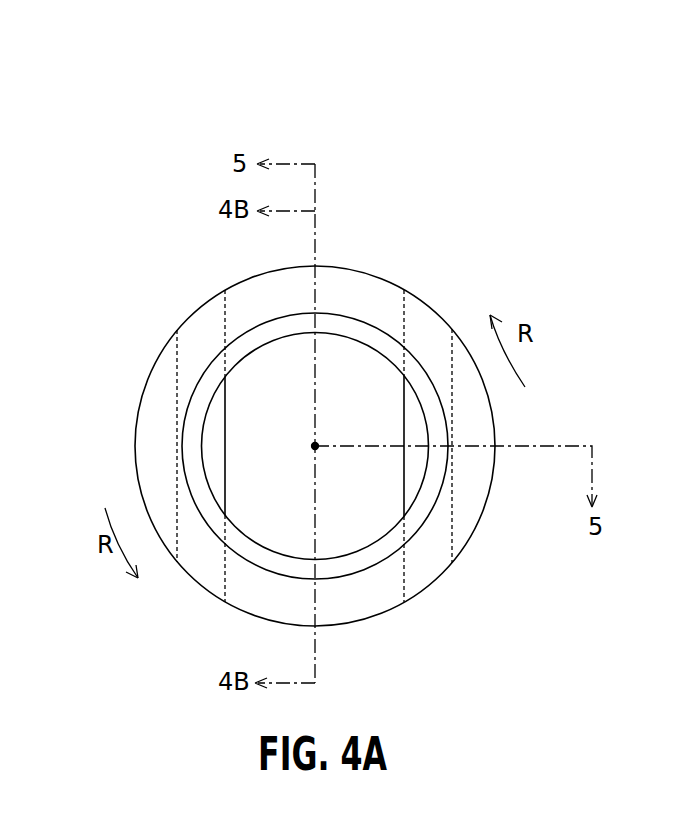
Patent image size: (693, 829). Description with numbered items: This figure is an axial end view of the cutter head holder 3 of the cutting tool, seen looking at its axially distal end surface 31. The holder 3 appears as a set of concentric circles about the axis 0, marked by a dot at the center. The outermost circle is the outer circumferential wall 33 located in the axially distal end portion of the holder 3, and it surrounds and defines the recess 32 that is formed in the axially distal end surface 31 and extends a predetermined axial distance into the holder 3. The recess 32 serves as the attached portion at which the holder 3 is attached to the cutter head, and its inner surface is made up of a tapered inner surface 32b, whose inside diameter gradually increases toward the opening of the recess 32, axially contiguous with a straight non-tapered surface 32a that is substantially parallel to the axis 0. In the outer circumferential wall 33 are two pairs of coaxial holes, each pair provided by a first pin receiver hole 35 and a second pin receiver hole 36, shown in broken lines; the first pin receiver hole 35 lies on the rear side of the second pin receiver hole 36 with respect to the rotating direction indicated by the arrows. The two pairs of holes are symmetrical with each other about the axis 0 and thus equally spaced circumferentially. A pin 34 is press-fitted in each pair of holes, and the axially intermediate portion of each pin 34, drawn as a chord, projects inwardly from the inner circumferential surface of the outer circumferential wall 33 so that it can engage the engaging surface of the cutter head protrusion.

The cutter head holder 3 is at (520, 263).
The axially distal end surface 31 is at (315, 418).
The outer circumferential wall 33 is at (357, 295).
The recess 32 is at (387, 449).
The non-tapered surface 32a is at (378, 535).
The tapered inner surface 32b is at (432, 493).
The pin 34 is at (213, 443).
The first pin receiver hole 35 is at (225, 330).
The second pin receiver hole 36 is at (405, 330).
The axis 0 is at (318, 443).